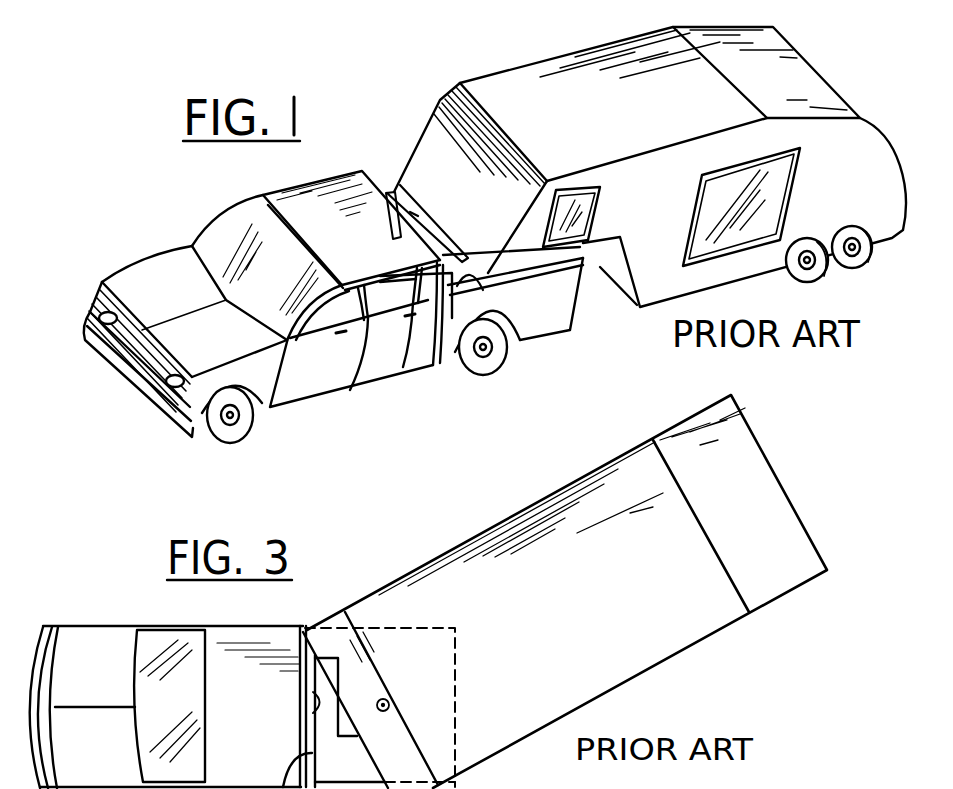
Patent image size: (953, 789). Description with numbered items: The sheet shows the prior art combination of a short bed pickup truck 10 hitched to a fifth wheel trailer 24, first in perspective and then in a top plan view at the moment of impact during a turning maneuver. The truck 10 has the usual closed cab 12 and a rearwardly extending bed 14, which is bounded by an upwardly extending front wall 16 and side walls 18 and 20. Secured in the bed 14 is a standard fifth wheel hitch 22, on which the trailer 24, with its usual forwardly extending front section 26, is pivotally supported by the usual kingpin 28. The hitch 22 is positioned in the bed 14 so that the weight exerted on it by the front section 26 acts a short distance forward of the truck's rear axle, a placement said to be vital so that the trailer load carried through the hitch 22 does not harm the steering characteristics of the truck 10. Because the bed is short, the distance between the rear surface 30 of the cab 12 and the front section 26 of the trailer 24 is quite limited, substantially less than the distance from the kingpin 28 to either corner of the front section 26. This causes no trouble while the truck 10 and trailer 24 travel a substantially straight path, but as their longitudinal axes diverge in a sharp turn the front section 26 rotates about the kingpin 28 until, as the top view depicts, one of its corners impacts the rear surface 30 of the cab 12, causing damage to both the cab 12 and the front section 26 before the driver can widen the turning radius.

In FIG. 1, the short bed pickup truck 10 is at (191, 246).
In FIG. 3, the short bed pickup truck 10 is at (146, 624).
In FIG. 1, the closed cab 12 is at (334, 232).
In FIG. 3, the closed cab 12 is at (224, 728).
In FIG. 1, the bed 14 is at (583, 283).
In FIG. 3, the bed 14 is at (327, 747).
In FIG. 1, the front wall 16 is at (460, 282).
In FIG. 1, the side wall 18 is at (389, 192).
In FIG. 1, the side wall 20 is at (563, 322).
In FIG. 1, the fifth wheel hitch 22 is at (448, 243).
In FIG. 3, the fifth wheel hitch 22 is at (352, 731).
In FIG. 1, the fifth wheel trailer 24 is at (560, 55).
In FIG. 3, the fifth wheel trailer 24 is at (608, 608).
In FIG. 1, the front section 26 is at (456, 187).
In FIG. 3, the front section 26 is at (341, 613).
In FIG. 3, the kingpin 28 is at (384, 698).
In FIG. 3, the rear surface 30 is at (313, 697).